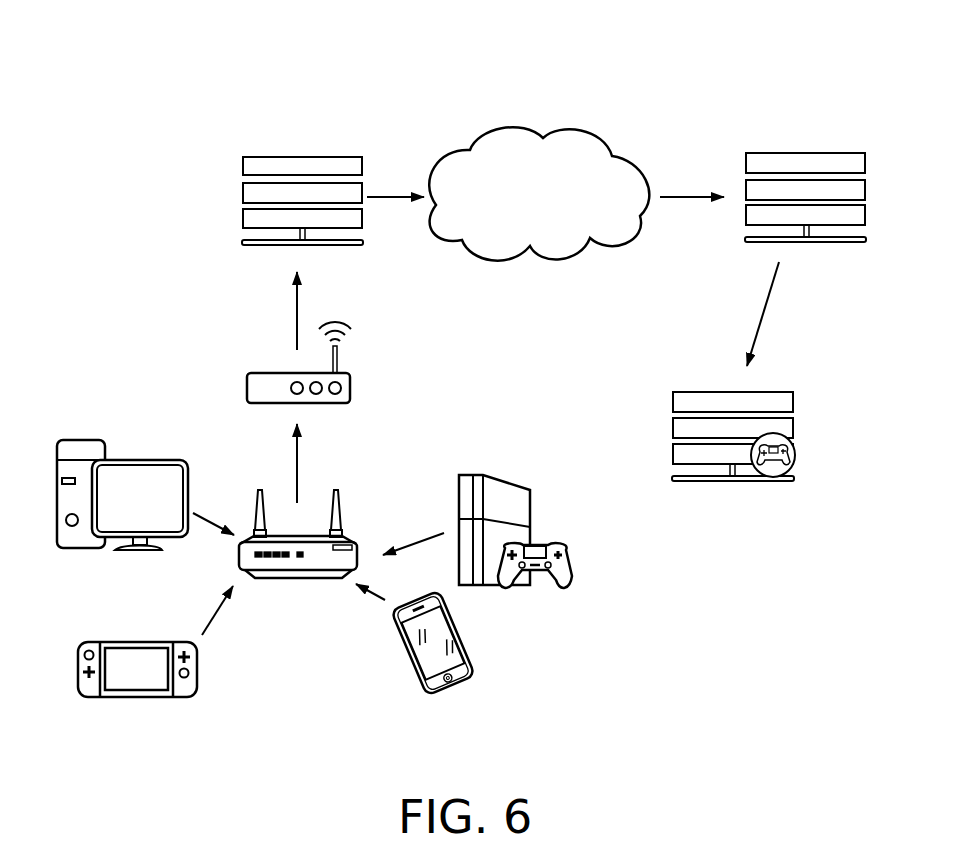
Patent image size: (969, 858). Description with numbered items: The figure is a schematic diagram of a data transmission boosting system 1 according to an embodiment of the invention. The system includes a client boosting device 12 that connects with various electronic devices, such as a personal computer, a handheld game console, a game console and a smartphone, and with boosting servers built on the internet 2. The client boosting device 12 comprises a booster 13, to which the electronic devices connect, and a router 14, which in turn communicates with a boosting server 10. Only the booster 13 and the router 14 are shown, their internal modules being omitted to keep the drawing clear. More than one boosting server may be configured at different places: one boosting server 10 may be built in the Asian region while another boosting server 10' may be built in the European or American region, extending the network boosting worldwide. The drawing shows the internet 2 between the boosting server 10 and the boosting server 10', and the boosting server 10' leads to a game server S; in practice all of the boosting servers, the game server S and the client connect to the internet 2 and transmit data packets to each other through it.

The data transmission boosting system 1 is at (222, 84).
The internet 2 is at (589, 134).
The boosting server 10 is at (302, 168).
The boosting server 10' is at (805, 165).
The client boosting device 12 is at (216, 373).
The booster 13 is at (350, 538).
The router 14 is at (350, 381).
The game server S is at (697, 392).